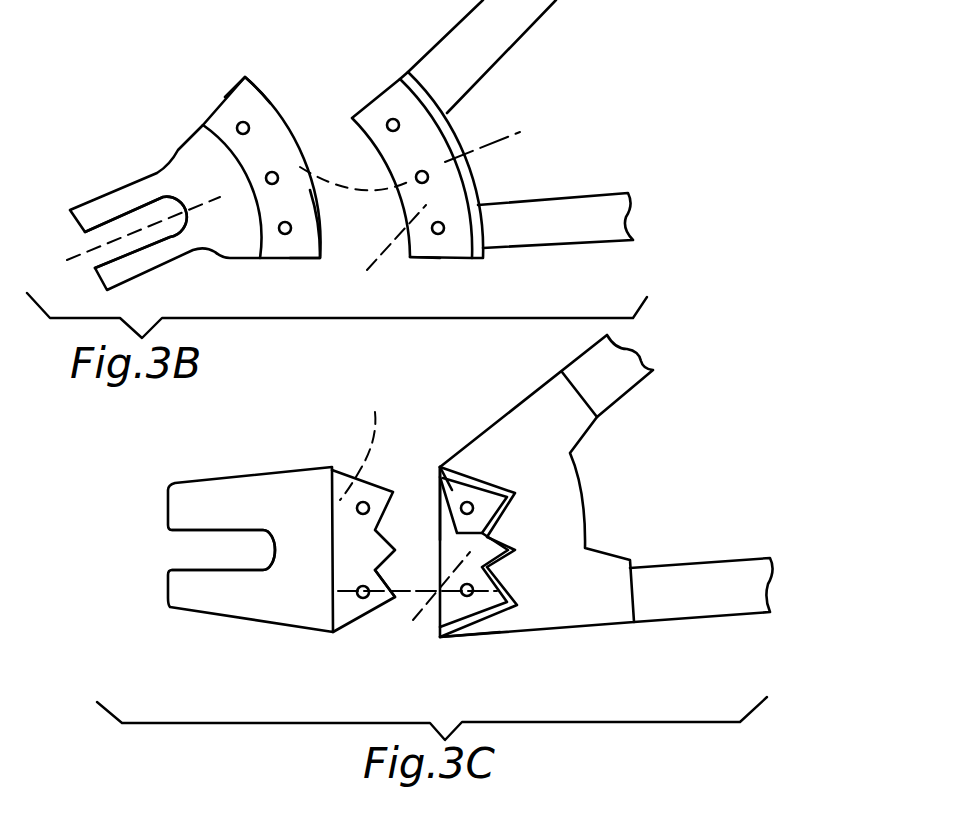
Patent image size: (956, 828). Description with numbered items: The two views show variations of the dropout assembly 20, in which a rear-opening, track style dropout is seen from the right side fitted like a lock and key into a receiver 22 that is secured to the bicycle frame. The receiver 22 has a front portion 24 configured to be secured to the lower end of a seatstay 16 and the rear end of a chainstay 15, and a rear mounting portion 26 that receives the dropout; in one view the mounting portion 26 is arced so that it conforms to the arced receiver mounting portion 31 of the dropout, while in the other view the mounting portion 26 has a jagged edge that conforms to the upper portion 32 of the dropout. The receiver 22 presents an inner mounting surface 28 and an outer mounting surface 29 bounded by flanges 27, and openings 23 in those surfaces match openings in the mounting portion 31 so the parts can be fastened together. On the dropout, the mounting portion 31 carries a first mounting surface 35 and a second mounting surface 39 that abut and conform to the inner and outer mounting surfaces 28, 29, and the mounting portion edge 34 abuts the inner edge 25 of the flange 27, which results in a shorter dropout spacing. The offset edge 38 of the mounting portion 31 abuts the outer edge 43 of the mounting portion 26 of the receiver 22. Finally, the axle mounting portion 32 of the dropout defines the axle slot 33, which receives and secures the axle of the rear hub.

In FIG. 3B, the chainstay 15 is at (561, 217).
In FIG. 3C, the chainstay 15 is at (693, 560).
In FIG. 3B, the seatstay 16 is at (508, 25).
In FIG. 3C, the seatstay 16 is at (637, 390).
In FIG. 3B, the dropout assembly 20 is at (309, 86).
In FIG. 3C, the dropout assembly 20 is at (426, 404).
In FIG. 3B, the receiver 22 is at (443, 148).
In FIG. 3B, the openings 23 is at (272, 184).
In FIG. 3C, the openings 23 is at (363, 598).
In FIG. 3C, the front portion 24 is at (578, 592).
In FIG. 3C, the inner edge 25 is at (440, 513).
In FIG. 3C, the mounting portion 26 is at (460, 633).
In FIG. 3B, the flange 27 is at (473, 180).
In FIG. 3C, the flange 27 is at (500, 490).
In FIG. 3B, the inner mounting surface 28 is at (433, 214).
In FIG. 3C, the inner mounting surface 28 is at (417, 601).
In FIG. 3B, the outer mounting surface 29 is at (427, 240).
In FIG. 3C, the outer mounting surface 29 is at (452, 488).
In FIG. 3B, the receiver mounting portion 31 is at (298, 197).
In FIG. 3B, the axle mounting portion 32 is at (213, 232).
In FIG. 3C, the axle mounting portion 32 is at (268, 597).
In FIG. 3B, the axle slot 33 is at (135, 222).
In FIG. 3C, the axle slot 33 is at (235, 552).
In FIG. 3B, the mounting portion edge 34 is at (278, 106).
In FIG. 3C, the mounting portion edge 34 is at (387, 510).
In FIG. 3B, the first mounting surface 35 is at (227, 90).
In FIG. 3C, the first mounting surface 35 is at (375, 412).
In FIG. 3B, the offset edge 38 is at (230, 160).
In FIG. 3C, the offset edge 38 is at (335, 527).
In FIG. 3C, the second mounting surface 39 is at (377, 600).
In FIG. 3C, the outer edge 43 is at (437, 538).